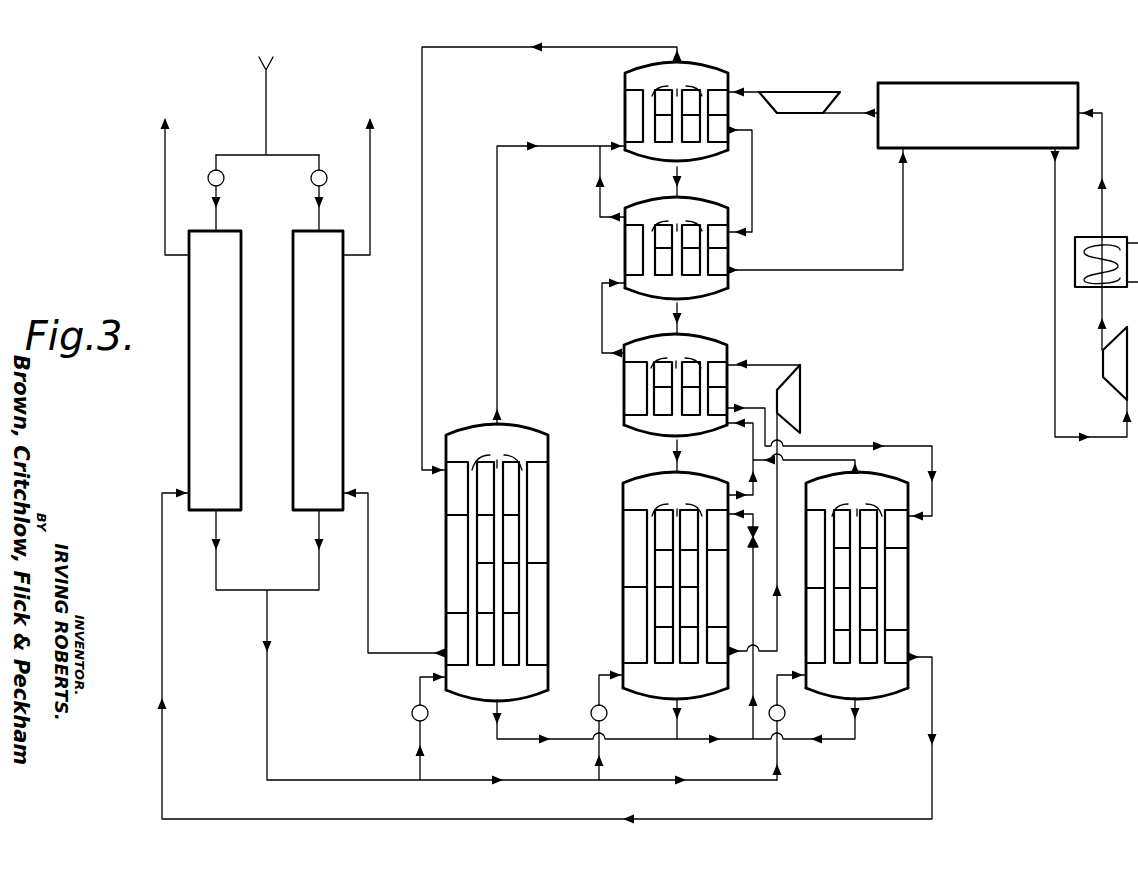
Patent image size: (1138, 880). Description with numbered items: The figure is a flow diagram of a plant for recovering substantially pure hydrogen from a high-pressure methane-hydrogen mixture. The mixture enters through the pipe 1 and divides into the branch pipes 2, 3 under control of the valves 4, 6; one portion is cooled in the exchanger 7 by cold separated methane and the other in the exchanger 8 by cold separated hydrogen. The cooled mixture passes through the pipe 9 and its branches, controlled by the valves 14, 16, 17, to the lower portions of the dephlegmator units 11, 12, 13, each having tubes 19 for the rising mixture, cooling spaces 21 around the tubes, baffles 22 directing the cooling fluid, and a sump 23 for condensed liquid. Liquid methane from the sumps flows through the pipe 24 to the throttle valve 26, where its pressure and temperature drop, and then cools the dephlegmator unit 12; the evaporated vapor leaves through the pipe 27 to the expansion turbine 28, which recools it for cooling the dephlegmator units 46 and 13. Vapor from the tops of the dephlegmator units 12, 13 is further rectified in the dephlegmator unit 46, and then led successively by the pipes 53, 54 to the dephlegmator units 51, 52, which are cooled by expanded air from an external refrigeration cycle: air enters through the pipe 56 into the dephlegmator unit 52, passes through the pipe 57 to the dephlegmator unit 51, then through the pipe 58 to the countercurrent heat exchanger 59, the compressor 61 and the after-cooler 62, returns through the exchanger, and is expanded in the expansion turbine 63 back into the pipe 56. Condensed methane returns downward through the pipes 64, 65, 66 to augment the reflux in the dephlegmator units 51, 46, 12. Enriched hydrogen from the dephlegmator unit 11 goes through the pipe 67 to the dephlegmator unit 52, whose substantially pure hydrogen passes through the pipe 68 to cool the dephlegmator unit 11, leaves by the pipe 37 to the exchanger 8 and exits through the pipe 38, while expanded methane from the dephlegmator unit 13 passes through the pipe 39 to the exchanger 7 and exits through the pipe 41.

The pipe 1 is at (268, 107).
The branch pipe 2 is at (244, 155).
The branch pipe 3 is at (293, 155).
The valve 4 is at (208, 180).
The valve 6 is at (327, 176).
The exchanger 7 is at (215, 370).
The exchanger 8 is at (318, 370).
The pipe 9 is at (267, 691).
The dephlegmator unit 11 is at (446, 548).
The dephlegmator unit 12 is at (623, 573).
The dephlegmator unit 13 is at (908, 540).
The valve 14 is at (412, 710).
The valve 16 is at (591, 710).
The valve 17 is at (785, 713).
The tubes 19 is at (677, 291).
The cooling spaces 21 is at (452, 503).
The baffles 22 is at (456, 612).
The sump 23 is at (677, 422).
The pipe 24 is at (753, 608).
The throttle valve 26 is at (748, 545).
The pipe 27 is at (777, 518).
The expansion turbine 28 is at (800, 393).
The pipe 37 is at (368, 620).
The pipe 38 is at (370, 210).
The pipe 39 is at (162, 545).
The pipe 41 is at (165, 203).
The dephlegmator unit 46 is at (624, 391).
The dephlegmator unit 51 is at (625, 248).
The dephlegmator unit 52 is at (625, 122).
The pipe 53 is at (602, 322).
The pipe 54 is at (600, 197).
The pipe 56 is at (752, 88).
The pipe 57 is at (752, 184).
The pipe 58 is at (846, 274).
The countercurrent heat exchanger 59 is at (1005, 262).
The compressor 61 is at (1117, 378).
The after-cooler 62 is at (1088, 287).
The expansion turbine 63 is at (806, 113).
The pipe 64 is at (677, 178).
The pipe 65 is at (677, 318).
The pipe 66 is at (677, 456).
The pipe 67 is at (497, 322).
The pipe 68 is at (473, 50).